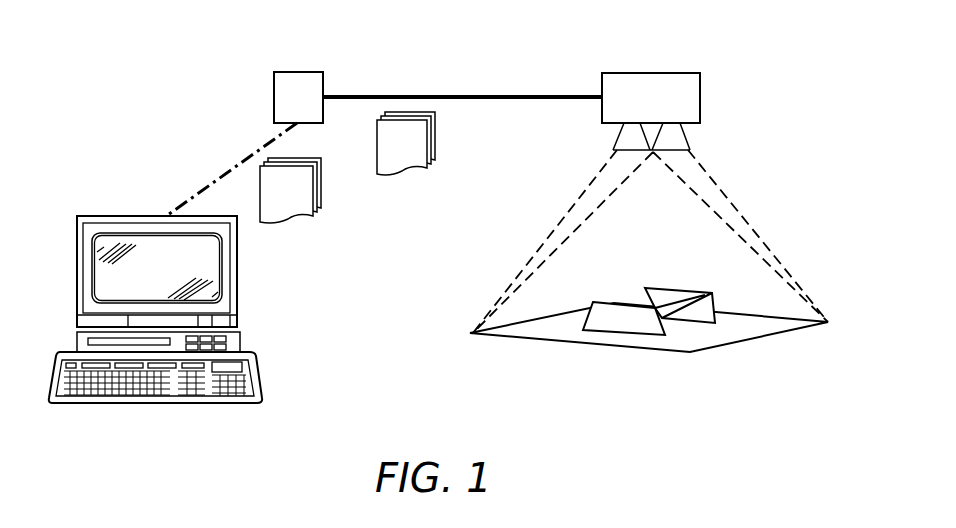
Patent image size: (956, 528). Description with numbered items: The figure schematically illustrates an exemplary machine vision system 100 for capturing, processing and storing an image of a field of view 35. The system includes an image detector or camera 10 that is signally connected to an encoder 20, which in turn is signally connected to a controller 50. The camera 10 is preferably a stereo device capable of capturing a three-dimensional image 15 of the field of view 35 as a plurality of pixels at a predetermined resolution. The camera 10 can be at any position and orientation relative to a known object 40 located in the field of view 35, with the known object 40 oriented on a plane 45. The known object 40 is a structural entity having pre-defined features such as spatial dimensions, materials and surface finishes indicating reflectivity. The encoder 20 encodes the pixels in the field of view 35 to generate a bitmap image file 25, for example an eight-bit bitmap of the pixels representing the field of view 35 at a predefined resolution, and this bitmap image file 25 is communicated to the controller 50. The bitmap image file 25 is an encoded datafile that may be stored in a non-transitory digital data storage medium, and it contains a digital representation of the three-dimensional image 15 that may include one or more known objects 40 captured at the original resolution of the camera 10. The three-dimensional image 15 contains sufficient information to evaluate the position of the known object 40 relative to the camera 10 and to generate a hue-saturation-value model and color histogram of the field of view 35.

The machine vision system 100 is at (484, 78).
The image detector (camera) 10 is at (651, 111).
The three-dimensional (3D) image 15 is at (406, 143).
The encoder 20 is at (244, 144).
The bitmap image file 25 is at (290, 190).
The field of view (FOV) 35 is at (748, 218).
The known object 40 is at (613, 316).
The plane 45 is at (540, 332).
The controller 50 is at (155, 309).